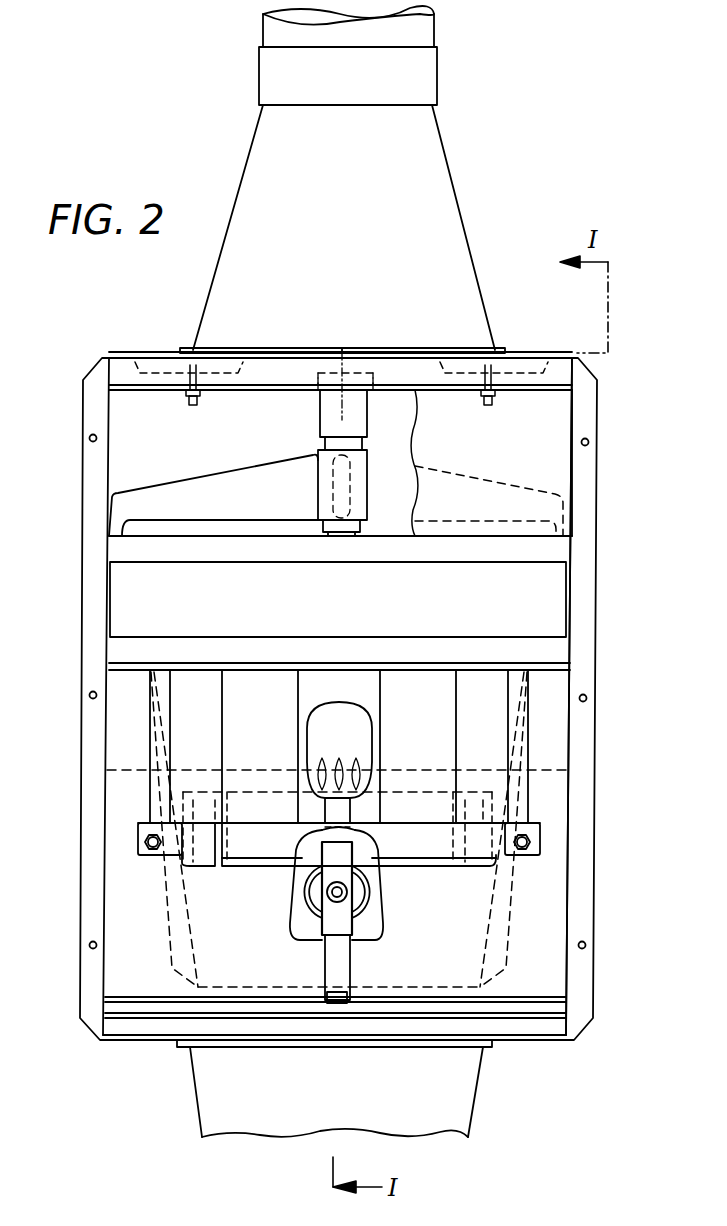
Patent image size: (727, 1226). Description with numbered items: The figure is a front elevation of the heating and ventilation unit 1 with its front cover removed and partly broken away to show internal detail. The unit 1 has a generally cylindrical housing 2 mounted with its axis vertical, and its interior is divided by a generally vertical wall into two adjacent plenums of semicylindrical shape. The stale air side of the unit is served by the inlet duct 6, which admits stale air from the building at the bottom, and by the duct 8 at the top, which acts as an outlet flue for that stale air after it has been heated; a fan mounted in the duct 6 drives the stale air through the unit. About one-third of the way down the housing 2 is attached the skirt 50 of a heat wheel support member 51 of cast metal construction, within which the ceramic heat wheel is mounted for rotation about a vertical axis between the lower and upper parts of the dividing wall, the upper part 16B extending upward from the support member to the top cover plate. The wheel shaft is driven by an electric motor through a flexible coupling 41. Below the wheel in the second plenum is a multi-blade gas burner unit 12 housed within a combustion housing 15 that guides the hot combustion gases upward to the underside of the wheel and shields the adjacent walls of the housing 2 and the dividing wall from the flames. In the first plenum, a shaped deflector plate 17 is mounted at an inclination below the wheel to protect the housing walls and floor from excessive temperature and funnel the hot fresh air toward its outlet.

The heating and ventilation unit 1 is at (603, 743).
The housing 2 is at (580, 617).
The inlet duct 6 is at (458, 1100).
The outlet duct 8 is at (348, 240).
The multi-blade gas burner unit 12 is at (276, 855).
The combustion housing 15 is at (148, 725).
The upper part of the dividing wall 16B is at (519, 452).
The deflector plate 17 is at (200, 988).
The flexible coupling 41 is at (328, 417).
The skirt 50 is at (350, 612).
The heat wheel support member 51 is at (212, 476).